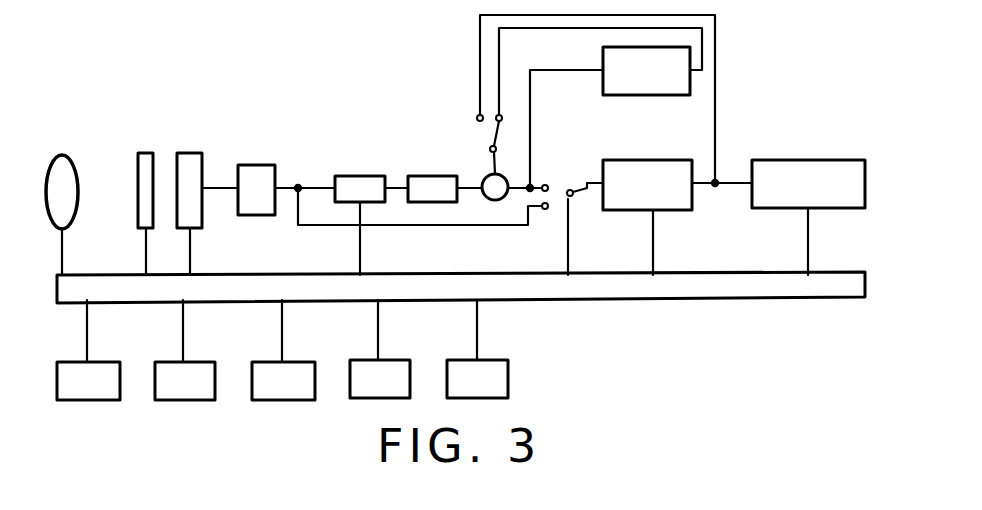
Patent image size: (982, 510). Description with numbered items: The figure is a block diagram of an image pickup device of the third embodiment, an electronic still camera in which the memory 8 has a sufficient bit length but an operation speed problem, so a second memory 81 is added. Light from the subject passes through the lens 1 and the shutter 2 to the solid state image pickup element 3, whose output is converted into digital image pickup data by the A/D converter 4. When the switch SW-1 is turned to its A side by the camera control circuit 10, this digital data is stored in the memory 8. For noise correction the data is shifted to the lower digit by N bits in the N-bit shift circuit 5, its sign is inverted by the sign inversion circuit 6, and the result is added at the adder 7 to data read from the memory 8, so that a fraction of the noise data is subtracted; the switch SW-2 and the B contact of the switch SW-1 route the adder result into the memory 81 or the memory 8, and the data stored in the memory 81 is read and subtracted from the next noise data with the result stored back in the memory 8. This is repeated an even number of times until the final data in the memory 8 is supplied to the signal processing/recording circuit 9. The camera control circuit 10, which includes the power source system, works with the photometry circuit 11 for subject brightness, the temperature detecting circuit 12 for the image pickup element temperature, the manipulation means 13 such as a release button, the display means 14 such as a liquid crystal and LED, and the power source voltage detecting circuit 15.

The lens 1 is at (70, 158).
The shutter 2 is at (148, 153).
The solid state image pickup element 3 is at (200, 153).
The A/D converter 4 is at (262, 165).
The N-bit shift circuit 5 is at (360, 175).
The sign inversion circuit 6 is at (415, 175).
The adder 7 is at (486, 178).
The memory 8 is at (641, 160).
The memory 81 is at (654, 96).
The signal processing/recording circuit 9 is at (811, 160).
The camera control circuit 10 is at (447, 274).
The photometry circuit 11 is at (104, 362).
The temperature detecting circuit 12 is at (200, 362).
The manipulation means 13 is at (300, 362).
The display means 14 is at (394, 362).
The power source voltage detecting circuit 15 is at (492, 362).
The switch SW-1 is at (574, 210).
The switch SW-2 is at (475, 111).